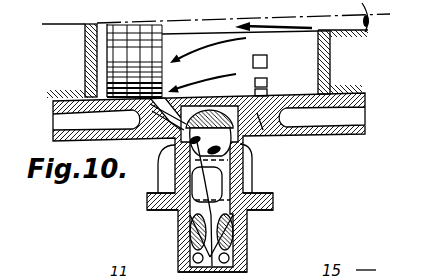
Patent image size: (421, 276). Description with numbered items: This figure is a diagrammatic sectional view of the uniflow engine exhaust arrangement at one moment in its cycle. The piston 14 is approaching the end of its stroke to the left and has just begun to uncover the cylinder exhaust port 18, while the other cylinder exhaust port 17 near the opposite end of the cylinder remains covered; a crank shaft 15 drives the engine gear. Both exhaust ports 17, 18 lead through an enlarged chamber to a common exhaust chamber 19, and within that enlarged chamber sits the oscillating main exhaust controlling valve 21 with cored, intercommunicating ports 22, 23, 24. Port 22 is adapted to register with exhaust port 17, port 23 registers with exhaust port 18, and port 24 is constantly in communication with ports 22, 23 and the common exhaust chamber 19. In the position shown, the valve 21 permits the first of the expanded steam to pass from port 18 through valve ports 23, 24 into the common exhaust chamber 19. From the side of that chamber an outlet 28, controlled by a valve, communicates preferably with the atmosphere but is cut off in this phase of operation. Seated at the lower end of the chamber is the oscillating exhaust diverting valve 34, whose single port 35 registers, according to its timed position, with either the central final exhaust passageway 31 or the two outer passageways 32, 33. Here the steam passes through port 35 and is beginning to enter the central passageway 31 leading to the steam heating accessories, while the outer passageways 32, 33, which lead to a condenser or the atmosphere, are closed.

The piston 14 is at (135, 32).
The axis line / flow direction 15 is at (243, 17).
The exhaust port 17 is at (267, 62).
The exhaust port 18 is at (107, 128).
The common exhaust chamber 19 is at (241, 150).
The main exhaust controlling valve 21 is at (215, 104).
The valve port 22 is at (216, 140).
The valve port 23 is at (164, 157).
The valve port 24 is at (196, 166).
The outlet 28 is at (190, 185).
The central final exhaust port 31 is at (240, 273).
The outer final exhaust port 32 is at (193, 254).
The outer final exhaust port 33 is at (238, 252).
The exhaust diverting valve 34 is at (191, 224).
The valve port 35 is at (232, 213).